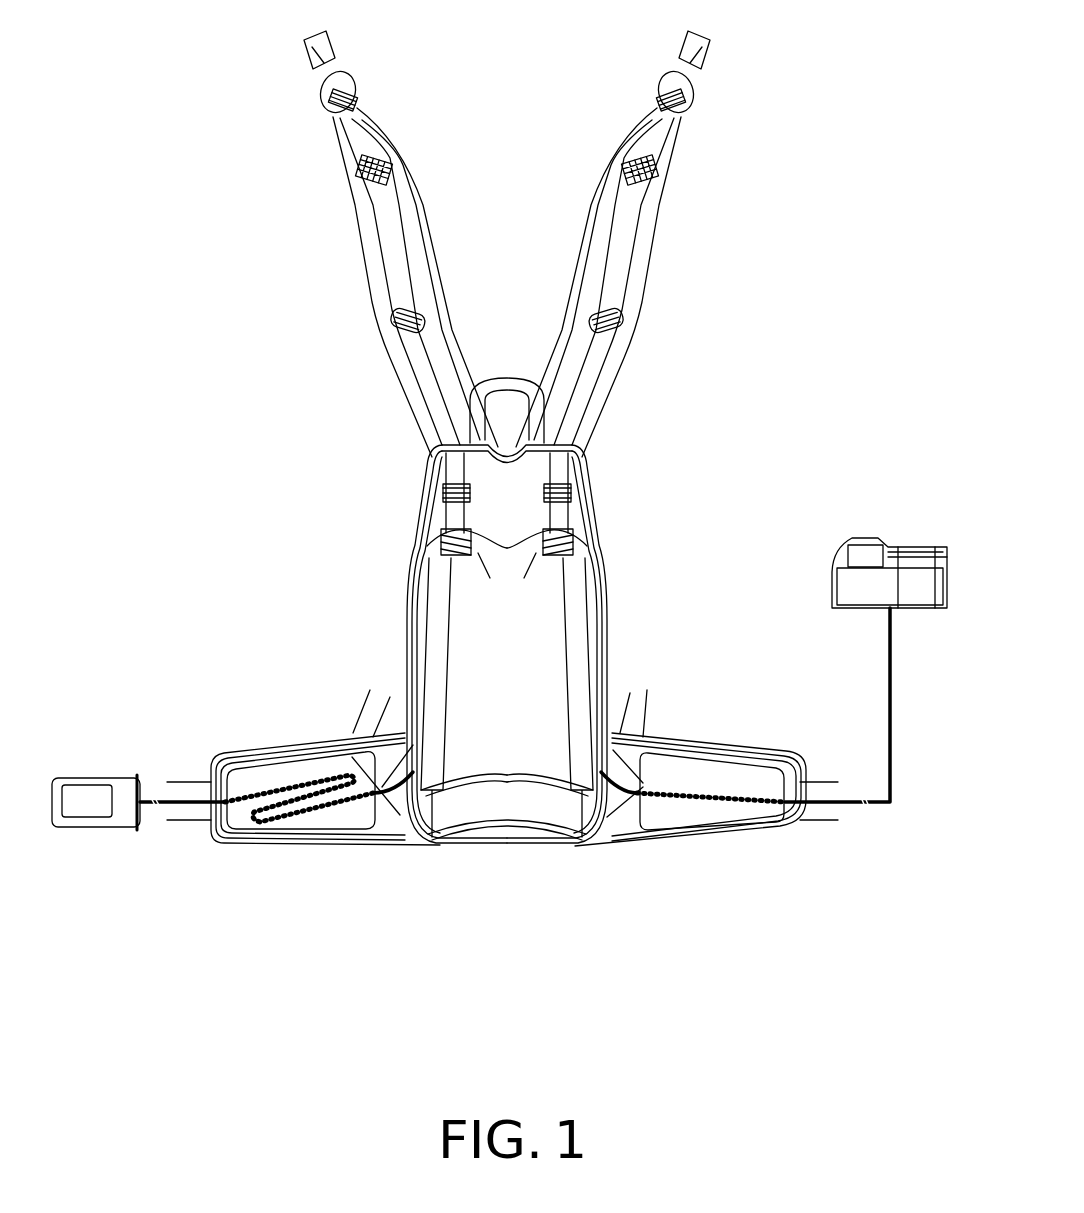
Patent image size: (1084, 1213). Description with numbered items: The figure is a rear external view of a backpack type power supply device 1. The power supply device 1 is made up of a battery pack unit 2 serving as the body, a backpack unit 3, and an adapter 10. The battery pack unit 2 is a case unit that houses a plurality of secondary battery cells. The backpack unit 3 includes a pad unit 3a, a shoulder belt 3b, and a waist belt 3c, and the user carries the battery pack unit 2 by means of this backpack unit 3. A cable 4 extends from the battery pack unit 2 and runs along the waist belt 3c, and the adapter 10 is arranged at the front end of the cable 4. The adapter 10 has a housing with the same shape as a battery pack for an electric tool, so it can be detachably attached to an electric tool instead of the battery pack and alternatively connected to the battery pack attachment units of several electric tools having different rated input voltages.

The power supply device 1 is at (672, 992).
The battery pack unit 2 is at (537, 617).
The backpack unit 3 is at (655, 250).
The pad unit 3a is at (433, 508).
The shoulder belt 3b is at (380, 272).
The waist belt 3c is at (267, 750).
The cable 4 is at (187, 800).
The adapter 10 is at (863, 540).